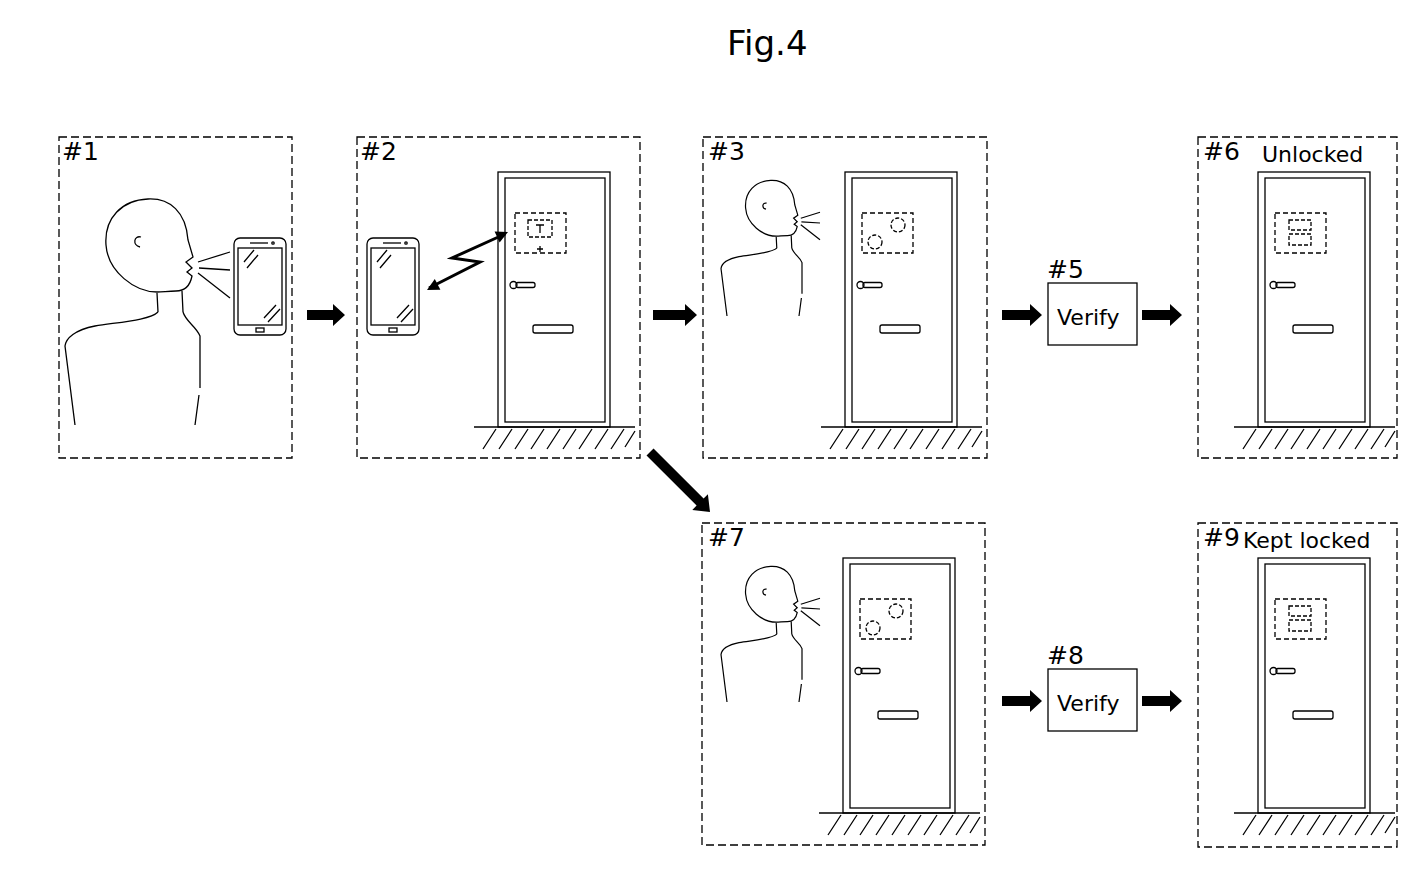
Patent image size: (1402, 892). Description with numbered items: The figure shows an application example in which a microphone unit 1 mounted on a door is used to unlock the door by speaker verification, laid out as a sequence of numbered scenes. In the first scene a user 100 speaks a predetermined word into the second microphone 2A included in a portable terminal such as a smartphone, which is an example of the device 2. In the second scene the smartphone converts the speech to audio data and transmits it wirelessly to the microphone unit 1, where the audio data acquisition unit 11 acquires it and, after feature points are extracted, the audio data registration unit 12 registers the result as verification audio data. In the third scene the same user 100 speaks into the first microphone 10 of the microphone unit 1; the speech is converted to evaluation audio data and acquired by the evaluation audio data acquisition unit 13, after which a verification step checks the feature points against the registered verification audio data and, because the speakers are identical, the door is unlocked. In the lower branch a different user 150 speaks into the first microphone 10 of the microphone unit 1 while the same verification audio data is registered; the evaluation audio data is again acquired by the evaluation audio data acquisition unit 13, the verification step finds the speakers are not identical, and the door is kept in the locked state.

The microphone unit 1 is at (567, 228).
The device 2 is at (262, 236).
The second microphone 2A is at (261, 336).
The first microphone 10 is at (878, 250).
The audio data acquisition unit 11 is at (538, 213).
The audio data registration unit 12 is at (545, 253).
The evaluation audio data acquisition unit 13 is at (903, 215).
The user 100 is at (200, 388).
The user 150 is at (801, 682).